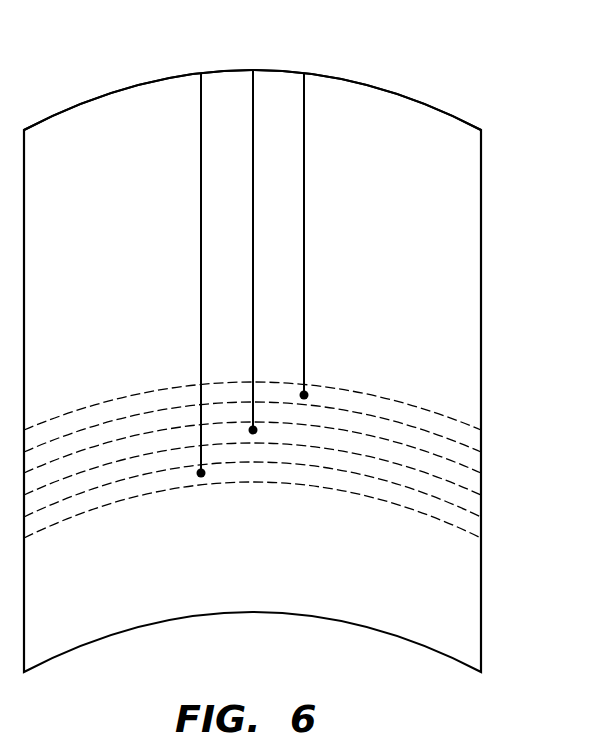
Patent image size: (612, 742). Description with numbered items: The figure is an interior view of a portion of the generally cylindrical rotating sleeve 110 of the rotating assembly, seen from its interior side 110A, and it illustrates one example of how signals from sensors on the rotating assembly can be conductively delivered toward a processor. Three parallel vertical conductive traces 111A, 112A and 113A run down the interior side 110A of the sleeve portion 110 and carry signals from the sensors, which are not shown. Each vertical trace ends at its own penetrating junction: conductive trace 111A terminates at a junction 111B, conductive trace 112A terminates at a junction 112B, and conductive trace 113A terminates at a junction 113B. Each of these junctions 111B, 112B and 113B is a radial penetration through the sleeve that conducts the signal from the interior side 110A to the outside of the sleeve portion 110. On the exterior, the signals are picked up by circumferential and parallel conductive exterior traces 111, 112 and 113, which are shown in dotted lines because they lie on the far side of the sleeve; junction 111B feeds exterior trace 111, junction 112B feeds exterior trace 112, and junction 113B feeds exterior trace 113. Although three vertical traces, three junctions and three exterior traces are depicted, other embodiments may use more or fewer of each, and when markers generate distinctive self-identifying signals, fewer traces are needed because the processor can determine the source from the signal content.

The rotating sleeve 110 is at (481, 272).
The interior side 110A is at (461, 225).
The exterior trace 111 is at (387, 490).
The conductive trace 111A is at (201, 273).
The junction 111B is at (201, 477).
The exterior trace 112 is at (165, 440).
The conductive trace 112A is at (253, 245).
The junction 112B is at (253, 434).
The exterior trace 113 is at (395, 410).
The conductive trace 113A is at (304, 272).
The junction 113B is at (304, 395).